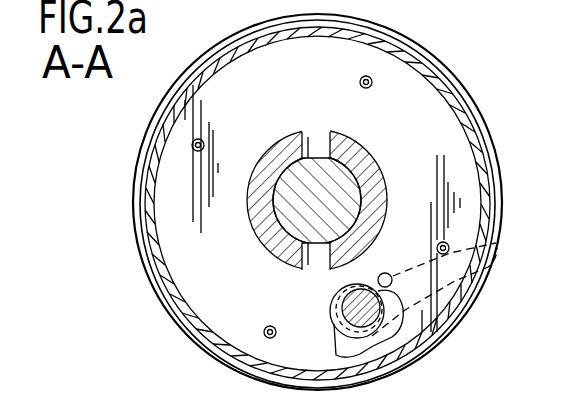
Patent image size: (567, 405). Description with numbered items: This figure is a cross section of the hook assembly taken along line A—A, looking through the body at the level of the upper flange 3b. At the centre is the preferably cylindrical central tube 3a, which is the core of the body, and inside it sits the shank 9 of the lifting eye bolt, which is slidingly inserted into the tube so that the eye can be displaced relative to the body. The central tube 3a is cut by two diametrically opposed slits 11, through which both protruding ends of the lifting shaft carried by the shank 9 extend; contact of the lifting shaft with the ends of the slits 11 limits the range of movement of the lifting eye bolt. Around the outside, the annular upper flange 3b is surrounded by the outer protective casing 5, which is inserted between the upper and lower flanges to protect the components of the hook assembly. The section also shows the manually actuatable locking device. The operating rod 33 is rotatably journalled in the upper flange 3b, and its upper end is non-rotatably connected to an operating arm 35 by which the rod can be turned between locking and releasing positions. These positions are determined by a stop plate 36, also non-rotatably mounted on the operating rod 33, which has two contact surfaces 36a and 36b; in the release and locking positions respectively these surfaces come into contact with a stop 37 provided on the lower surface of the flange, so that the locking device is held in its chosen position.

The central tube 3a is at (373, 193).
The upper flange 3b is at (383, 33).
The outer protective casing 5 is at (422, 62).
The shank 9 is at (305, 204).
The slits 11 is at (318, 147).
The operating rod 33 is at (352, 310).
The operating arm 35 is at (495, 243).
The stop plate 36 is at (392, 337).
The contact surface 36a is at (338, 343).
The contact surface 36b is at (390, 295).
The stop 37 is at (393, 277).